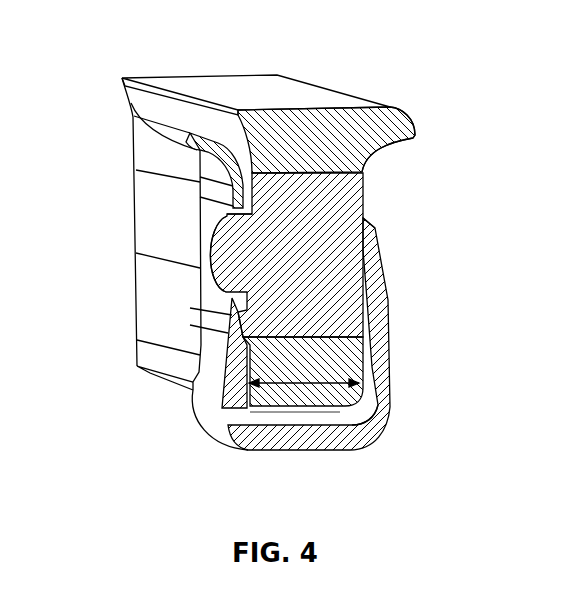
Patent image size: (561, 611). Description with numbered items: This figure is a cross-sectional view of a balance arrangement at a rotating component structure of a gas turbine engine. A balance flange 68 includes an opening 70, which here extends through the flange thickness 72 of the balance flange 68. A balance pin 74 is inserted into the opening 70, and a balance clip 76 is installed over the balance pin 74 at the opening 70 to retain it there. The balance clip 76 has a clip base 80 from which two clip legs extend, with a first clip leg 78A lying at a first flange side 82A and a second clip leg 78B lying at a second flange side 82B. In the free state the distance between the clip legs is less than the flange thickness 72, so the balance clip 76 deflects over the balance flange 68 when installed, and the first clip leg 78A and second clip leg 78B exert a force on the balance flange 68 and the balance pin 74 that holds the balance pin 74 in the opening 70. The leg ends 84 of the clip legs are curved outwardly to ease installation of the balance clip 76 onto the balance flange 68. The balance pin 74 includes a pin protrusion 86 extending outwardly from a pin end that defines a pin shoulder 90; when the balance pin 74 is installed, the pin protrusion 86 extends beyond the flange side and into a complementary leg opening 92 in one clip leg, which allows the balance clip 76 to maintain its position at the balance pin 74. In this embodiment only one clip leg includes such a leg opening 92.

The balance flange 68 is at (277, 87).
The opening 70 is at (385, 125).
The balance pin 74 is at (360, 200).
The leg end 84 is at (131, 103).
The leg opening 92 is at (218, 222).
The pin protrusion 86 is at (218, 265).
The first clip leg 78A is at (200, 323).
The balance clip 76 is at (203, 363).
The pin shoulder 90 is at (253, 327).
The second clip leg 78B is at (386, 364).
The second flange side 82B is at (372, 408).
The first flange side 82A is at (236, 447).
The clip base 80 is at (292, 443).
The flange thickness 72 is at (320, 422).